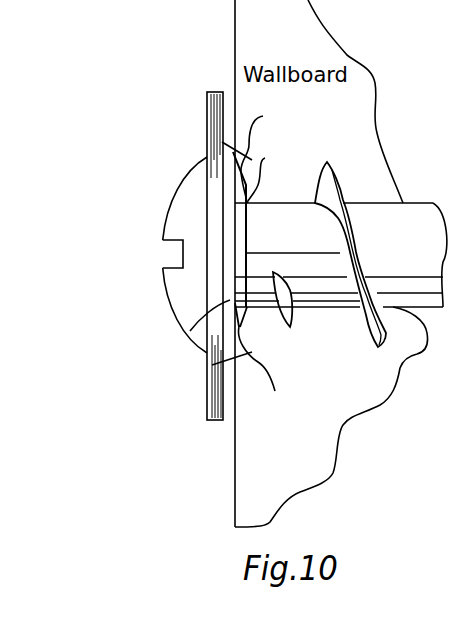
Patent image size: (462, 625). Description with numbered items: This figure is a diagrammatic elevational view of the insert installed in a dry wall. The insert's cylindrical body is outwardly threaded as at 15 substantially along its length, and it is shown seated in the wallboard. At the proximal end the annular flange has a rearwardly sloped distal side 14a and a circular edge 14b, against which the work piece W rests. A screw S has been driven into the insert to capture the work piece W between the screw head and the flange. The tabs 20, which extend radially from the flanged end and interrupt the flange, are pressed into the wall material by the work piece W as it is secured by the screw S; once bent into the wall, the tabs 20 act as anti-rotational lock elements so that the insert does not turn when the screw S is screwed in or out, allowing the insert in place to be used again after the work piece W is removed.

The work piece W is at (207, 117).
The screw S is at (180, 288).
The rearwardly sloped distal side 14a is at (265, 158).
The circular edge 14b is at (190, 331).
The thread 15 is at (376, 320).
The tabs 20 is at (263, 116).